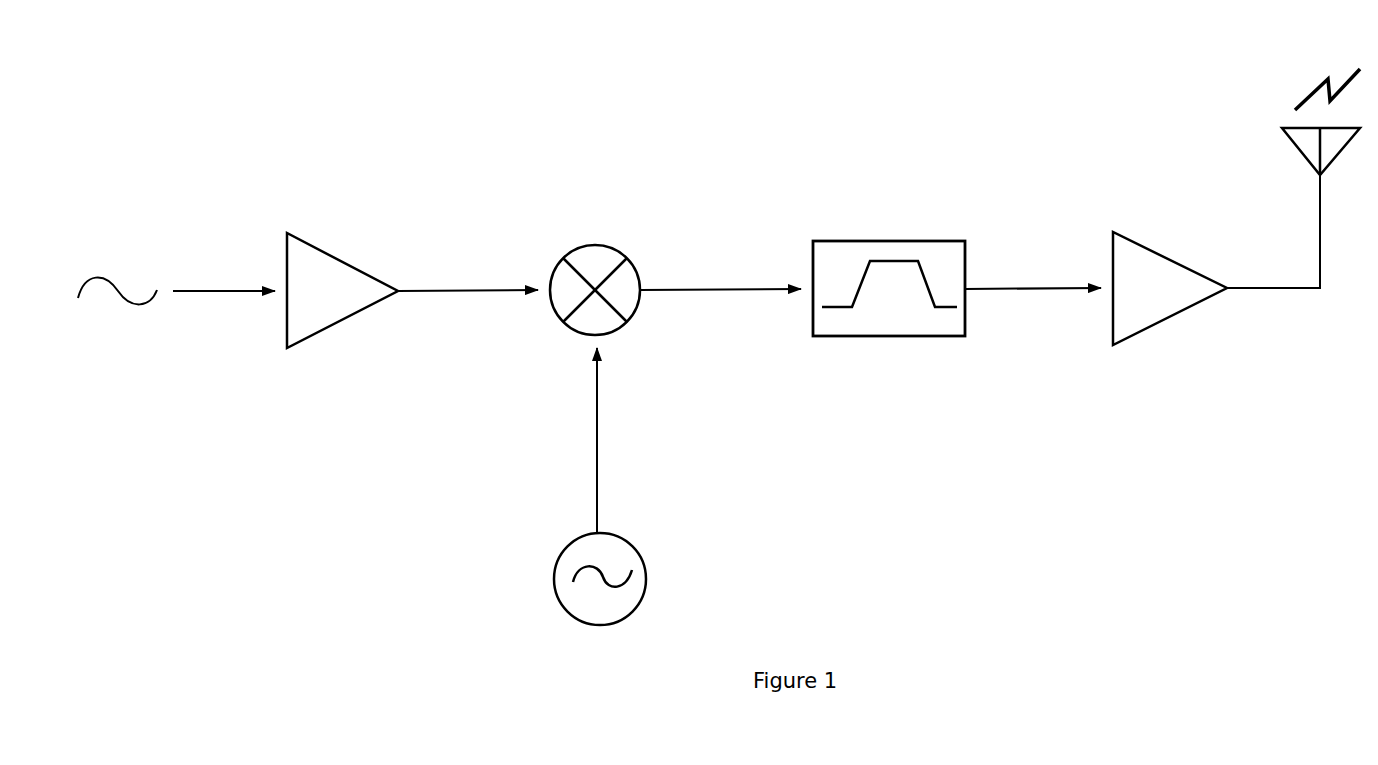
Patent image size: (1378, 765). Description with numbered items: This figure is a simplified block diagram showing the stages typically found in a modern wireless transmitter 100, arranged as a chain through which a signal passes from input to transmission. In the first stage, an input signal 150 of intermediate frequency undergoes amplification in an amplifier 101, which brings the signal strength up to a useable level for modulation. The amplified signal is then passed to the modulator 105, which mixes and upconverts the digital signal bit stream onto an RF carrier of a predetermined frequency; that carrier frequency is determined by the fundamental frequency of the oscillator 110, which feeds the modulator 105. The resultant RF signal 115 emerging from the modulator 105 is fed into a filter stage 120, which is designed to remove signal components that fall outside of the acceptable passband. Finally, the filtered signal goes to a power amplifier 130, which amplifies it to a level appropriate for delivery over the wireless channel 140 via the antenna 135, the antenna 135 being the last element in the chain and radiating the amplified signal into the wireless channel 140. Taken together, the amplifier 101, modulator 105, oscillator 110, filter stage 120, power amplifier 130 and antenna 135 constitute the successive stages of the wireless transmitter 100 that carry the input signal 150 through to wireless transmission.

The wireless transmitter 100 is at (700, 126).
The amplifier 101 is at (353, 265).
The modulator 105 is at (597, 245).
The oscillator 110 is at (635, 543).
The RF signal 115 is at (700, 290).
The filter stage 120 is at (888, 247).
The power amplifier 130 is at (1173, 260).
The antenna 135 is at (1320, 260).
The wireless channel 140 is at (1322, 80).
The input signal 150 is at (127, 335).